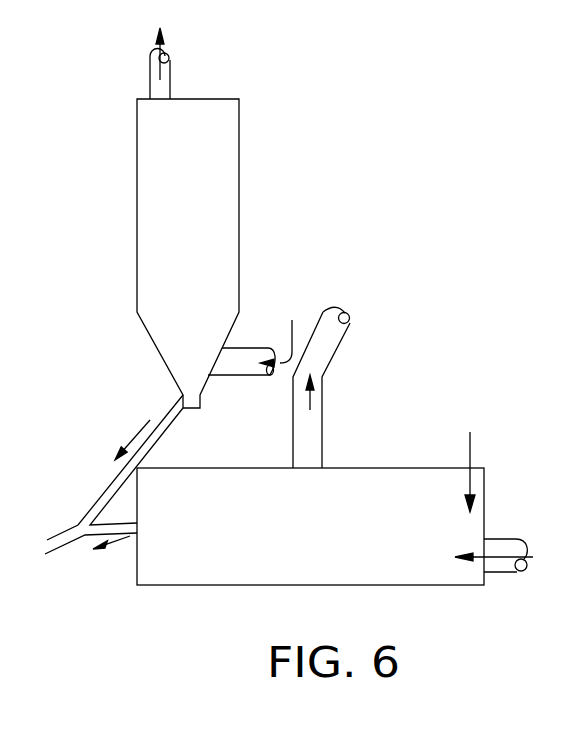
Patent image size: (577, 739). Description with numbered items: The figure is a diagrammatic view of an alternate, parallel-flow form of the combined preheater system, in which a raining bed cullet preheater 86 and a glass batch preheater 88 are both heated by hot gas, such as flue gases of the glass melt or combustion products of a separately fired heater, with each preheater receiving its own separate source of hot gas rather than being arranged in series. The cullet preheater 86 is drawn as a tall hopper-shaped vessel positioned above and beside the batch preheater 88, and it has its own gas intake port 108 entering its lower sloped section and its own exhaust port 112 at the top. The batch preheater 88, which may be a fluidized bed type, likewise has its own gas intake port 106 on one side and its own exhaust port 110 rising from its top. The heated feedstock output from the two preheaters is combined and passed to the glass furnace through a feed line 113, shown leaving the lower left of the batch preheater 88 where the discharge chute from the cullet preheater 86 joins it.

The cullet preheater 86 is at (239, 233).
The glass batch preheater 88 is at (397, 585).
The gas intake port 106 is at (510, 572).
The gas intake port 108 is at (246, 347).
The exhaust port 110 is at (322, 398).
The exhaust port 112 is at (170, 70).
The feed line 113 is at (62, 533).